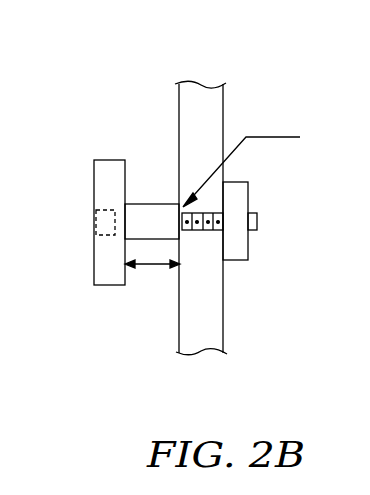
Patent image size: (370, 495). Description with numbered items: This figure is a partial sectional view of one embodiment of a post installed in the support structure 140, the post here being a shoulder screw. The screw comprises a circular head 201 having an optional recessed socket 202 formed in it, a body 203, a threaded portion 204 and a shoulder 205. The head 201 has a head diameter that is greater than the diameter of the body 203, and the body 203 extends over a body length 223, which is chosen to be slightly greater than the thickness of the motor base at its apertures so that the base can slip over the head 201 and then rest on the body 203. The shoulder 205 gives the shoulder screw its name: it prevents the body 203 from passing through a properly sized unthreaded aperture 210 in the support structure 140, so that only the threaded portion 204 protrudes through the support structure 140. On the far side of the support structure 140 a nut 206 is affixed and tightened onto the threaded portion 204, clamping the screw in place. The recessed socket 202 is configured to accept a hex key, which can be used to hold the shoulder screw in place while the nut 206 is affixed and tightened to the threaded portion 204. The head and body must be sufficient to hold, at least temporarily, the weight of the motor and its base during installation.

The support structure 140 is at (203, 100).
The circular head 201 is at (108, 177).
The recessed socket 202 is at (100, 227).
The body 203 is at (152, 220).
The threaded portion 204 is at (218, 230).
The shoulder 205 is at (259, 164).
The nut 206 is at (243, 195).
The unthreaded aperture 210 is at (187, 230).
The body length 223 is at (152, 268).